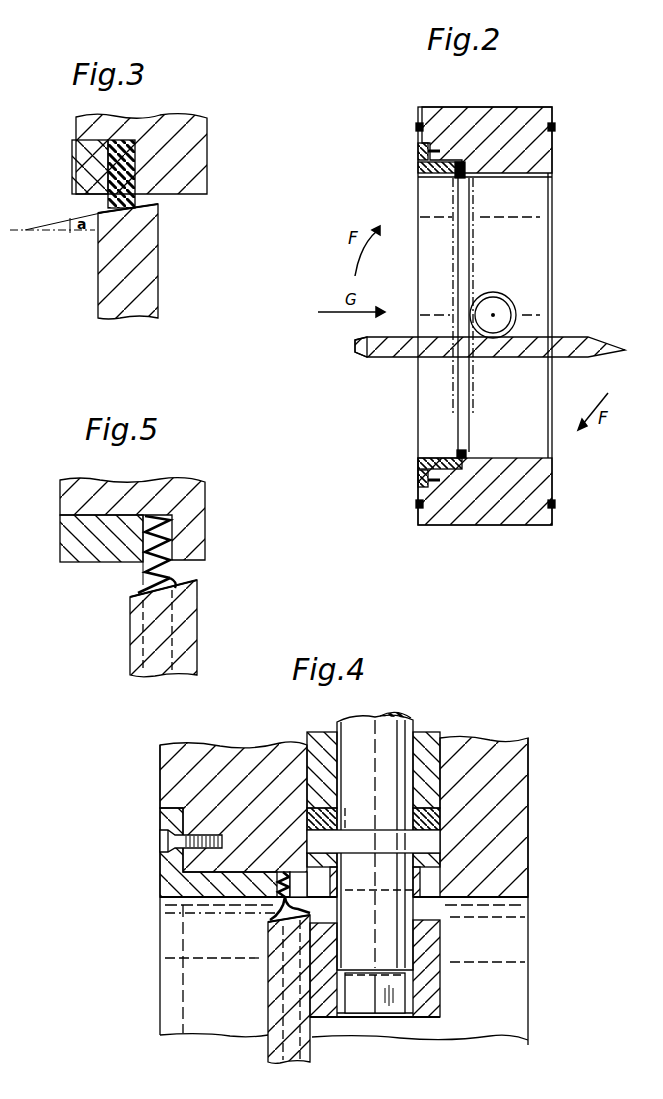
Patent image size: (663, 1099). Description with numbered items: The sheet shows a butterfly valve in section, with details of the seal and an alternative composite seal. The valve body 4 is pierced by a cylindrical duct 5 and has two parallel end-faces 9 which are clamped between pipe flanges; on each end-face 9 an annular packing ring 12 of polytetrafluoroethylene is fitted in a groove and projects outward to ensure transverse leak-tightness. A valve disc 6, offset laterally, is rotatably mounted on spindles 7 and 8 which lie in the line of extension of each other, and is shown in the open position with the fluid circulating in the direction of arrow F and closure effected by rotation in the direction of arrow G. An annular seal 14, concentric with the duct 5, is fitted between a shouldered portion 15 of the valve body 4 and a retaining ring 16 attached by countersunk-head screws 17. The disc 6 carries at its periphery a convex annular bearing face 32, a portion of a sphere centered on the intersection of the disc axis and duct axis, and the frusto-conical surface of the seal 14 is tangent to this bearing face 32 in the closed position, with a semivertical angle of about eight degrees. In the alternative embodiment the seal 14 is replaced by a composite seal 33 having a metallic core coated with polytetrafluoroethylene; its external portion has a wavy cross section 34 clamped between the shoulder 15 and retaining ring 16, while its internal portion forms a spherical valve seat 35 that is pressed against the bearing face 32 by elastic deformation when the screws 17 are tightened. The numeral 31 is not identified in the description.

In FIG. 3, the valve body 4 is at (195, 137).
In FIG. 2, the valve body 4 is at (535, 118).
In FIG. 4, the valve body 4 is at (510, 805).
In FIG. 2, the cylindrical duct 5 is at (530, 178).
In FIG. 4, the cylindrical duct 5 is at (495, 900).
In FIG. 3, the valve disc 6 is at (140, 293).
In FIG. 2, the valve disc 6 is at (500, 352).
In FIG. 5, the valve disc 6 is at (130, 662).
In FIG. 4, the valve disc 6 is at (285, 1047).
In FIG. 4, the spindle 7 is at (418, 731).
In FIG. 2, the spindle 8 is at (490, 292).
In FIG. 2, the end-face 9 is at (553, 397).
In FIG. 4, the end-face 9 is at (344, 891).
In FIG. 2, the annular packing ring 12 is at (415, 128).
In FIG. 3, the annular seal 14 is at (110, 168).
In FIG. 2, the annular seal 14 is at (455, 178).
In FIG. 5, the shouldered portion 15 is at (200, 508).
In FIG. 4, the shouldered portion 15 is at (292, 887).
In FIG. 3, the retaining ring 16 is at (83, 180).
In FIG. 2, the retaining ring 16 is at (420, 166).
In FIG. 5, the retaining ring 16 is at (97, 548).
In FIG. 4, the retaining ring 16 is at (170, 882).
In FIG. 4, the countersunk-head screw 17 is at (165, 836).
In FIG. 2, the bore inner wall 31 is at (505, 293).
In FIG. 3, the convex annular bearing face 32 is at (156, 206).
In FIG. 2, the convex annular bearing face 32 is at (362, 346).
In FIG. 5, the convex annular bearing face 32 is at (193, 590).
In FIG. 4, the convex annular bearing face 32 is at (276, 921).
In FIG. 5, the composite seal 33 is at (176, 574).
In FIG. 4, the composite seal 33 is at (318, 909).
In FIG. 5, the wavy cross section 34 is at (172, 554).
In FIG. 4, the wavy cross section 34 is at (283, 870).
In FIG. 5, the valve seat 35 is at (148, 586).
In FIG. 4, the valve seat 35 is at (278, 912).